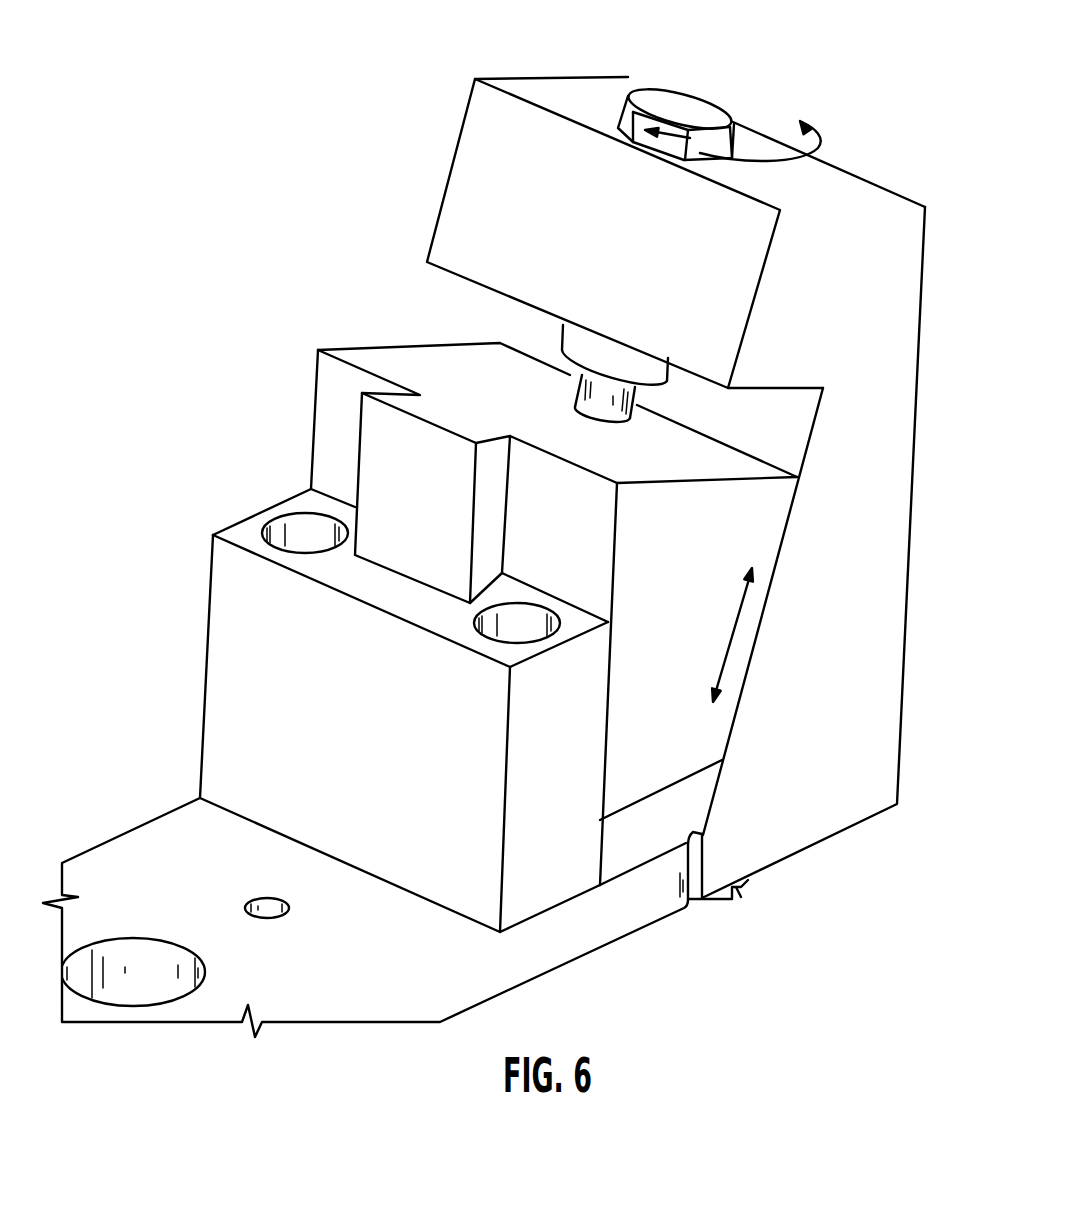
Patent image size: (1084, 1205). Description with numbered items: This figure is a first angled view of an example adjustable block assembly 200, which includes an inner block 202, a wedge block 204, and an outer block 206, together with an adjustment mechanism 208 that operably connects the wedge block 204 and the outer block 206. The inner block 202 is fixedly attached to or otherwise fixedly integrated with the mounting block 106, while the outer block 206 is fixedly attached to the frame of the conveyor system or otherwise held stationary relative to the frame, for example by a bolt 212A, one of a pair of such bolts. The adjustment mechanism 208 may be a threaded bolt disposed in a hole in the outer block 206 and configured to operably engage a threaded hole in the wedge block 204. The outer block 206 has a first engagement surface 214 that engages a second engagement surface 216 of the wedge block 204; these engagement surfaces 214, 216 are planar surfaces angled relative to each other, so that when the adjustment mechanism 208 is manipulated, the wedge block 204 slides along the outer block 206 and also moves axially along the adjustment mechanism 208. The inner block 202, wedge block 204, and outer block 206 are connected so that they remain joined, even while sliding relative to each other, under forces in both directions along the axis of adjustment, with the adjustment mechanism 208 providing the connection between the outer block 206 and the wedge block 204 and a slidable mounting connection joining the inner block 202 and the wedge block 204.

The mounting block 106 is at (135, 867).
The adjustable block assembly 200 is at (920, 183).
The inner block 202 is at (227, 617).
The wedge block 204 is at (773, 518).
The outer block 206 is at (843, 185).
The adjustment mechanism 208 is at (677, 107).
The bolt 212A is at (745, 887).
The first engagement surface 214 is at (790, 428).
The second engagement surface 216 is at (380, 463).